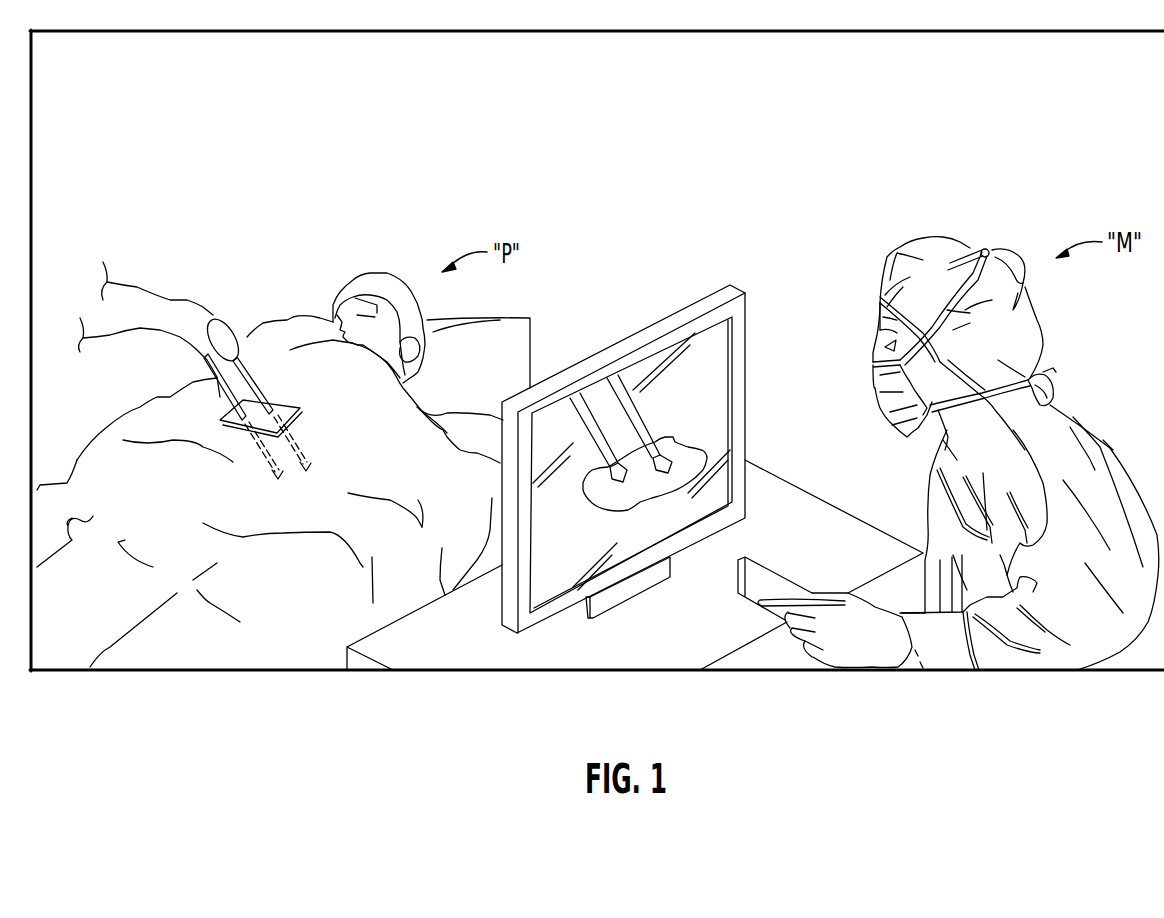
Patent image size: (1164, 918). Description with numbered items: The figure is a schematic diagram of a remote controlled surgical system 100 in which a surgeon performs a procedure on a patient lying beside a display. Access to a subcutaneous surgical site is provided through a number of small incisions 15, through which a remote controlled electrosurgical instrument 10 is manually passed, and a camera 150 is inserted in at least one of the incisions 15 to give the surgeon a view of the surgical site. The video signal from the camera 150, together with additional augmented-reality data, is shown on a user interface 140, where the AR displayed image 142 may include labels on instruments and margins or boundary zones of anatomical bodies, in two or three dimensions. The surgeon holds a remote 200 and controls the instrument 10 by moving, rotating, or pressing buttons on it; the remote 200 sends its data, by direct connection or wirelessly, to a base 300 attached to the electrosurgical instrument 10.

The remote controlled surgical system 100 is at (690, 160).
The base 300 is at (232, 338).
The camera 150 is at (204, 357).
The remote controlled electrosurgical instrument 10 is at (262, 394).
The incisions 15 is at (277, 481).
The user interface 140 is at (711, 304).
The AR displayed image 142 is at (722, 421).
The remote 200 is at (772, 587).